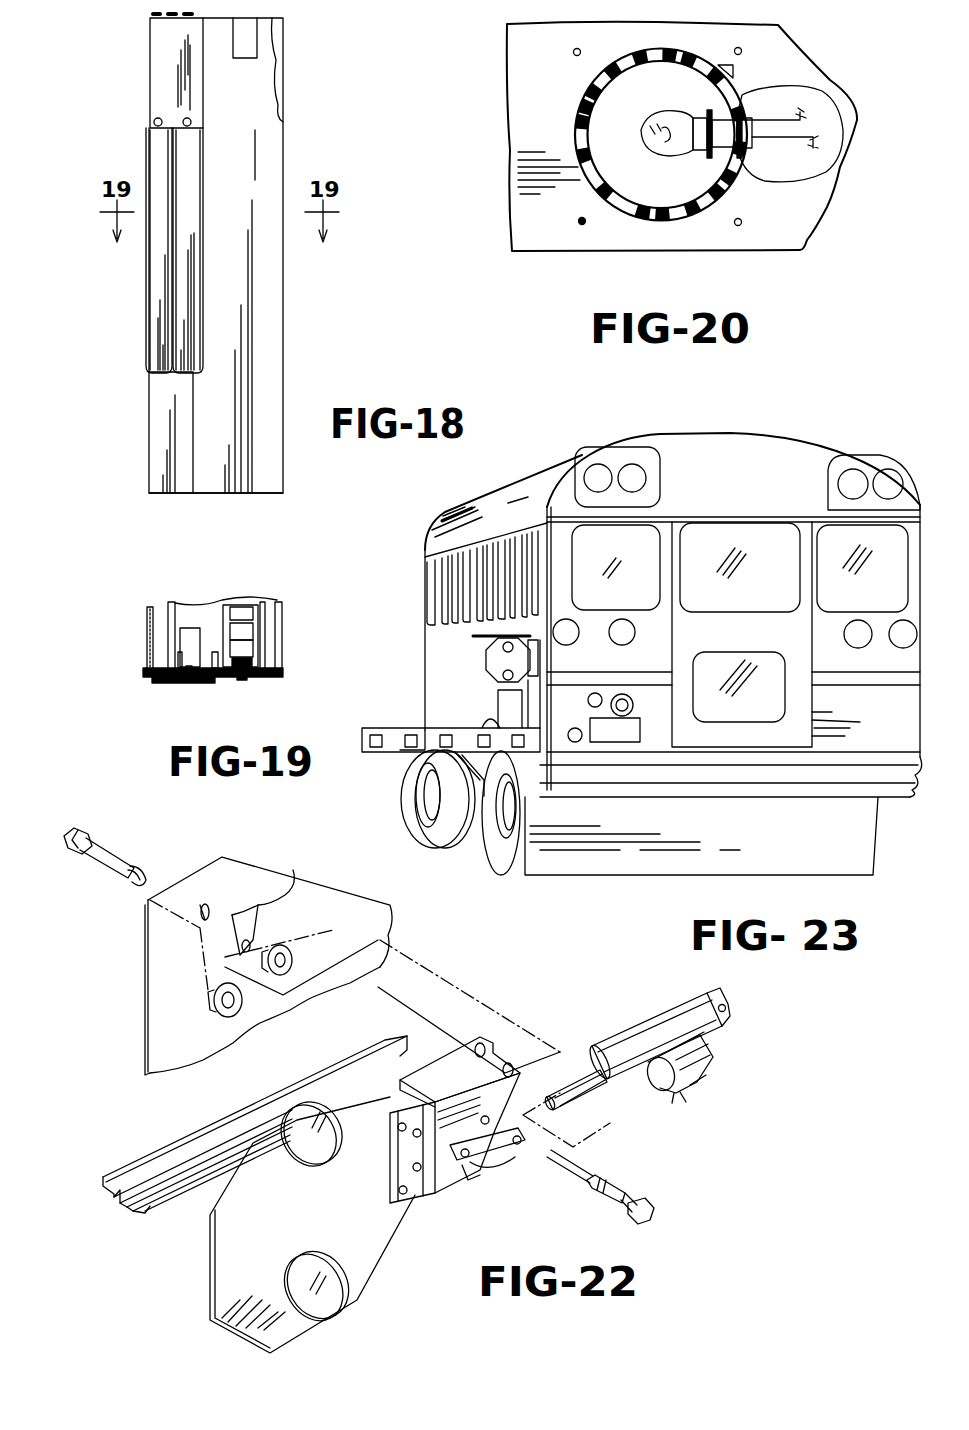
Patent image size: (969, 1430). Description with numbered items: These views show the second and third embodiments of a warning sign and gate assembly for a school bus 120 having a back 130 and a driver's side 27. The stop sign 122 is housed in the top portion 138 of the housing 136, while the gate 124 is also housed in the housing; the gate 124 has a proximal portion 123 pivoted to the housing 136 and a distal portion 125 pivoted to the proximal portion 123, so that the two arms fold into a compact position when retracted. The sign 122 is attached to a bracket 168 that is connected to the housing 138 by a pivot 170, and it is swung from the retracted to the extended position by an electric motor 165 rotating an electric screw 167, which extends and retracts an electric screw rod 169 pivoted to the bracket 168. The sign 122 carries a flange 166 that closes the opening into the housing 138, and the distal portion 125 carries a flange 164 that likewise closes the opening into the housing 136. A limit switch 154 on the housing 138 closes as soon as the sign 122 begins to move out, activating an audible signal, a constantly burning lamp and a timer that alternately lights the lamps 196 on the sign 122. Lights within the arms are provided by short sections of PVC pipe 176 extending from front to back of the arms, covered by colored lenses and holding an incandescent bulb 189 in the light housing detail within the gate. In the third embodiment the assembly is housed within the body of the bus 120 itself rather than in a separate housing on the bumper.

In FIG. 23, the driver's side 27 is at (520, 496).
In FIG. 23, the school bus 120 is at (848, 431).
In FIG. 19, the stop sign 122 is at (162, 607).
In FIG. 23, the stop sign 122 is at (490, 652).
In FIG. 22, the stop sign 122 is at (220, 1284).
In FIG. 23, the proximal portion 123 is at (510, 728).
In FIG. 20, the gate 124 is at (550, 237).
In FIG. 23, the gate 124 is at (398, 730).
In FIG. 19, the distal portion 125 is at (257, 617).
In FIG. 23, the distal portion 125 is at (396, 752).
In FIG. 23, the back 130 is at (750, 502).
In FIG. 18, the housing 136 is at (283, 36).
In FIG. 19, the housing 136 is at (277, 623).
In FIG. 18, the top portion of housing 138 is at (160, 90).
In FIG. 19, the top portion of housing 138 is at (147, 640).
In FIG. 19, the limit switch 154 is at (190, 628).
In FIG. 18, the flange 164 is at (280, 140).
In FIG. 19, the flange 164 is at (272, 677).
In FIG. 22, the electric motor 165 is at (682, 1085).
In FIG. 18, the flange 166 is at (157, 258).
In FIG. 19, the flange 166 is at (180, 682).
In FIG. 22, the flange 166 is at (134, 1130).
In FIG. 22, the electric screw 167 is at (700, 1016).
In FIG. 22, the bracket 168 is at (450, 1186).
In FIG. 22, the electric screw rod 169 is at (590, 1100).
In FIG. 22, the pivot 170 is at (158, 830).
In FIG. 19, the PVC pipe section 176 is at (243, 607).
In FIG. 20, the PVC pipe section 176 is at (592, 86).
In FIG. 20, the bulb 189 is at (660, 118).
In FIG. 22, the lamp 196 is at (342, 1280).